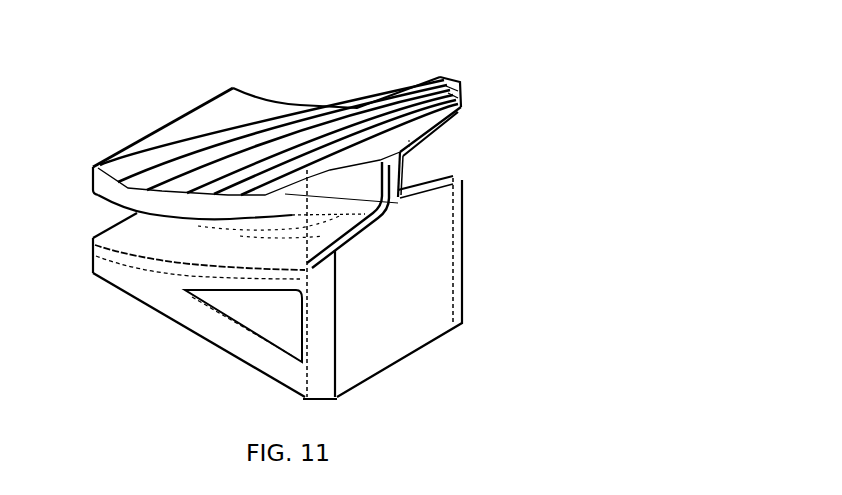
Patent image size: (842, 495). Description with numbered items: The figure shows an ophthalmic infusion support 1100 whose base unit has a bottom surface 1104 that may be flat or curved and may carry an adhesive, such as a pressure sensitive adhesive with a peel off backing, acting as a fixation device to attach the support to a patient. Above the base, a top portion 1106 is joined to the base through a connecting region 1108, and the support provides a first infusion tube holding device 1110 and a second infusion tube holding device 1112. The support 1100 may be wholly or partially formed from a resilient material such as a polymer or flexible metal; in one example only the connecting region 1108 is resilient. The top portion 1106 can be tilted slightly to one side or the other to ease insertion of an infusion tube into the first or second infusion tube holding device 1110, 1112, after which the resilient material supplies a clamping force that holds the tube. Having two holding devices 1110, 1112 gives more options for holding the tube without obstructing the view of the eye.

The ophthalmic infusion support 1100 is at (536, 351).
The bottom surface 1104 is at (207, 340).
The top portion 1106 is at (170, 157).
The connecting region 1108 is at (406, 142).
The first infusion tube holding device 1110 is at (400, 203).
The second infusion tube holding device 1112 is at (422, 163).